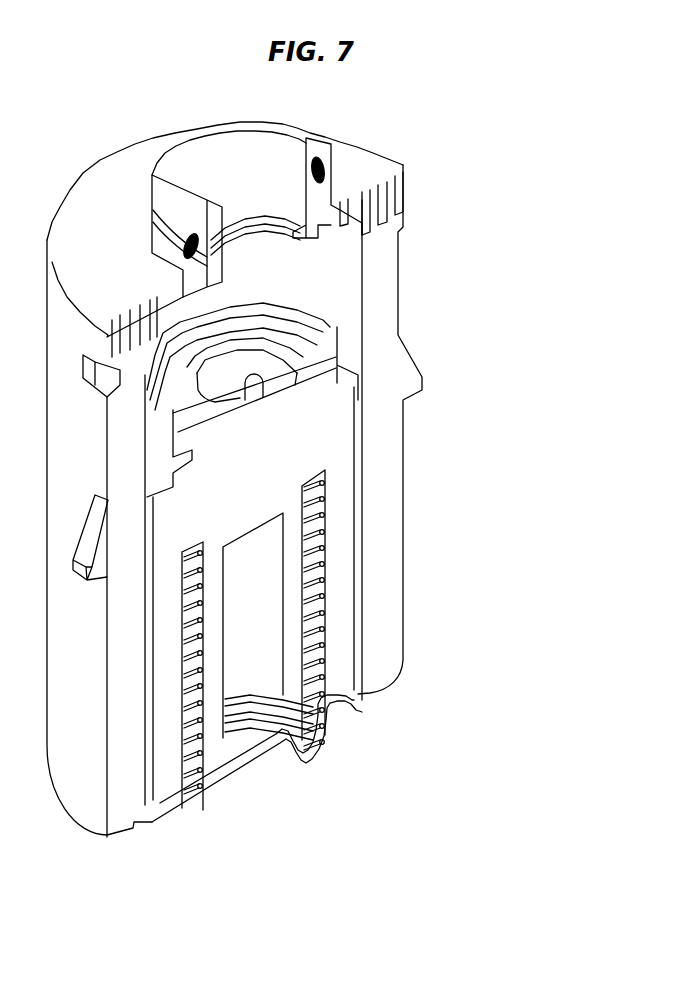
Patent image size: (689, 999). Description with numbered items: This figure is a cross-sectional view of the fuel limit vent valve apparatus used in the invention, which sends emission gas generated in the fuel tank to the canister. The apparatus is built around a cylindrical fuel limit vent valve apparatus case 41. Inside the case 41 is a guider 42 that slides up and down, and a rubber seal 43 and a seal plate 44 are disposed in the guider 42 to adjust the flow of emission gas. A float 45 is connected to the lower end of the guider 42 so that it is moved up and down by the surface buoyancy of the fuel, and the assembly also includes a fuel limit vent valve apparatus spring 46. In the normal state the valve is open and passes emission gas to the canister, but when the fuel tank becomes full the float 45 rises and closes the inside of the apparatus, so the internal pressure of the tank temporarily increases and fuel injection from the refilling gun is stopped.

The fuel limit vent valve apparatus case 41 is at (297, 479).
The guider 42 is at (352, 313).
The rubber seal 43 is at (365, 385).
The seal plate 44 is at (390, 533).
The float 45 is at (350, 598).
The fuel limit vent valve apparatus spring 46 is at (369, 640).